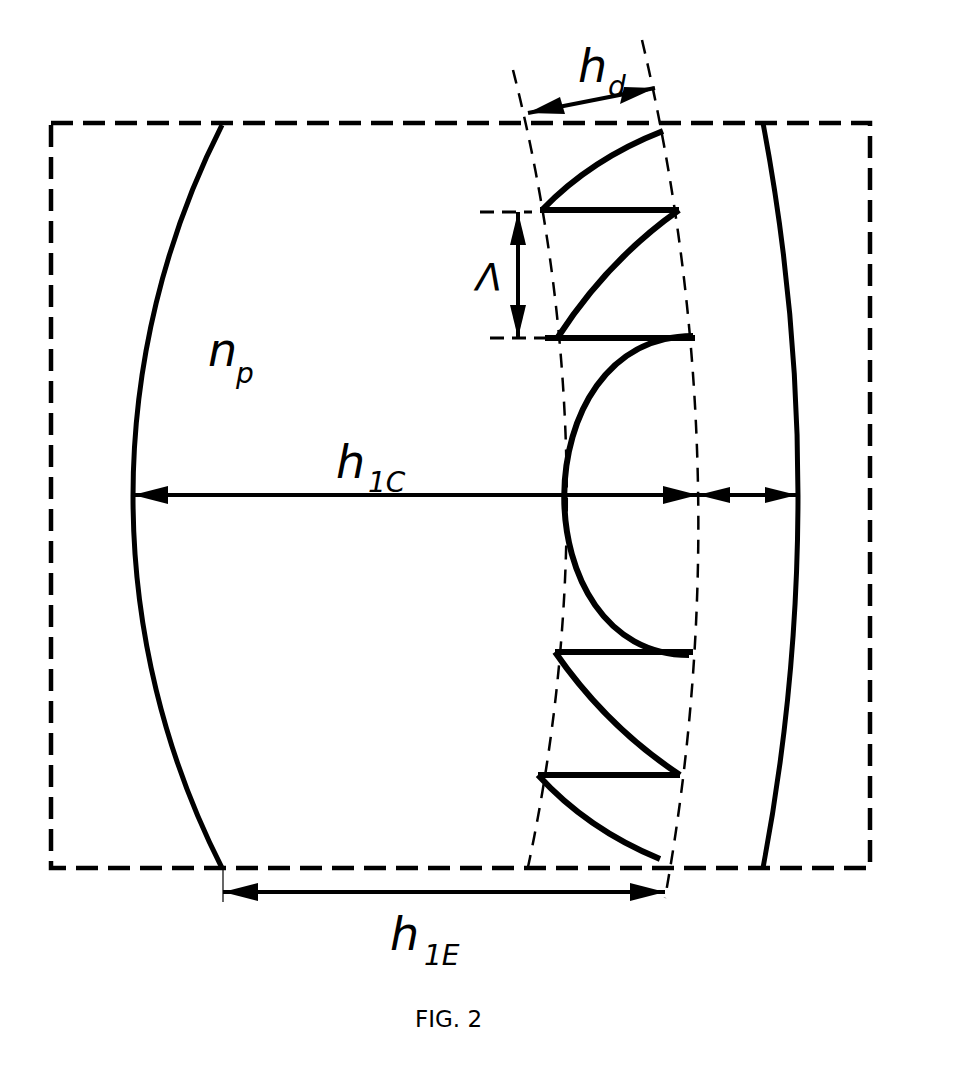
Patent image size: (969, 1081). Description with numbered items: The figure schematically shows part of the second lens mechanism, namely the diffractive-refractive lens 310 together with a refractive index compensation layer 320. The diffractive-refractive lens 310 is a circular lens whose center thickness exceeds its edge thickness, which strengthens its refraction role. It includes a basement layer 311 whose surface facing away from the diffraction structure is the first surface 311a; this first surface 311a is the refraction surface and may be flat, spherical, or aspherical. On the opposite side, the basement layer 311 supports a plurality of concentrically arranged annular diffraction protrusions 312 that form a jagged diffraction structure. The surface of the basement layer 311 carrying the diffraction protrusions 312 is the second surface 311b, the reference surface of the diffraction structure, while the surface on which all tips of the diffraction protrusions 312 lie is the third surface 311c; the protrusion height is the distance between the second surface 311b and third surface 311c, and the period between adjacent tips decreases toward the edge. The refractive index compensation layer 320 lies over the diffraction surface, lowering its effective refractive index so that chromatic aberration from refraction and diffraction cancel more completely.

The diffractive-refractive lens 310 is at (128, 240).
The basement layer 311 is at (421, 465).
The first surface 311a is at (195, 190).
The second surface 311b is at (533, 190).
The third surface 311c is at (673, 163).
The diffraction protrusion 312 is at (738, 220).
The refractive index compensation layer 320 is at (780, 200).